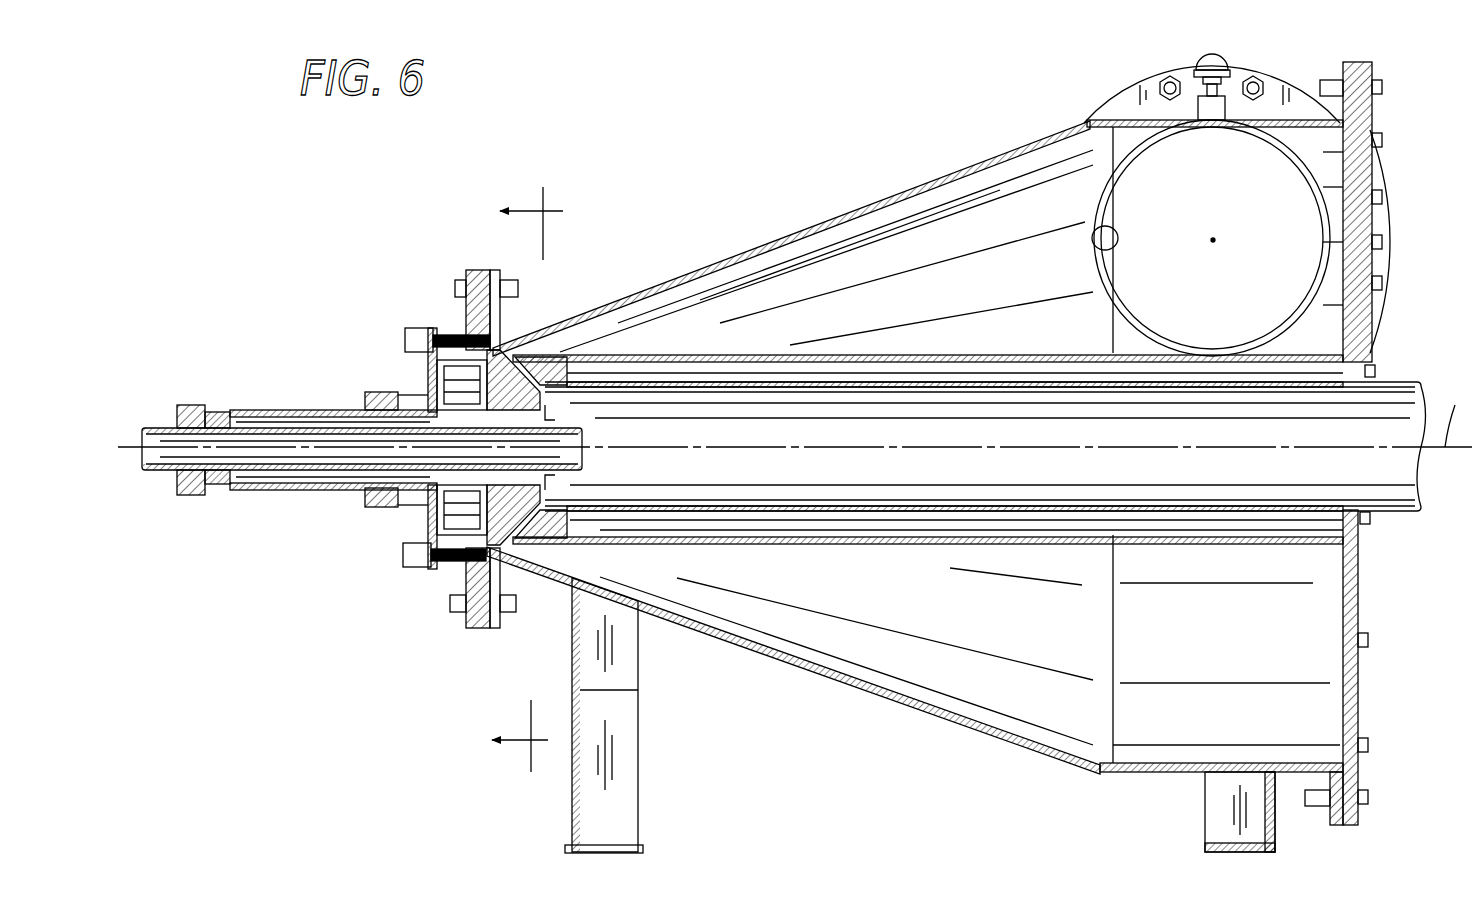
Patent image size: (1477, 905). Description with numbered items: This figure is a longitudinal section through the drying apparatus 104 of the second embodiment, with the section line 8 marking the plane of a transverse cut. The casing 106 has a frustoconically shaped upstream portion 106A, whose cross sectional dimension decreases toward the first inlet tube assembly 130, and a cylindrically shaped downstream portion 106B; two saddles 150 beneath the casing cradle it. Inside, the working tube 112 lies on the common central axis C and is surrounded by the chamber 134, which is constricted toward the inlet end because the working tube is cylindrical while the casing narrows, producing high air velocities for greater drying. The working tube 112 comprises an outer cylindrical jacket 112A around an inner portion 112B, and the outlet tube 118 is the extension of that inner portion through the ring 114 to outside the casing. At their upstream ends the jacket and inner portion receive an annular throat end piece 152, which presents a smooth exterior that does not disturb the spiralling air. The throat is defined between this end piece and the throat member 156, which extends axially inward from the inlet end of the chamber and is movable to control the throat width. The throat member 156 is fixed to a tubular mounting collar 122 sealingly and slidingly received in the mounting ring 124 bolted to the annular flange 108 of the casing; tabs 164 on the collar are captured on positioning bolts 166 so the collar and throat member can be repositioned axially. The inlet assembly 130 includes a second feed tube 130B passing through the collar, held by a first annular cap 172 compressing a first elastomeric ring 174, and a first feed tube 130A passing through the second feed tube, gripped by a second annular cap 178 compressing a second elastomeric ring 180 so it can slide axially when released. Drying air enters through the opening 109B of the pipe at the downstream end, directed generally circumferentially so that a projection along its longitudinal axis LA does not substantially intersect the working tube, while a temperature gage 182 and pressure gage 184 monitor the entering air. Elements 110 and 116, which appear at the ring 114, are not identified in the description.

The hopper assembly 104 is at (1383, 521).
The casing 106 is at (793, 434).
The frustoconically shaped upstream portion 106A is at (760, 246).
The cylindrically shaped downstream portion 106B is at (1122, 110).
The annular flange 108 is at (451, 422).
The opening 109B is at (1098, 250).
The bolt 110 is at (1334, 826).
The working tube 112 is at (973, 410).
The outer cylindrical jacket 112A is at (1130, 355).
The inner portion 112B is at (772, 378).
The ring 114 is at (1357, 677).
The fasteners 116 is at (1378, 125).
The outlet tube 118 is at (1433, 327).
The tubular mounting collar 122 is at (430, 391).
The mounting ring 124 is at (500, 268).
The first inlet tube assembly 130 is at (357, 522).
The first feed tube 130A is at (303, 410).
The second feed tube 130B is at (259, 490).
The chamber 134 is at (950, 240).
The saddles 150 is at (573, 666).
The annular throat end piece 152 is at (560, 347).
The throat member 156 is at (424, 522).
The tabs 164 is at (431, 328).
The positioning bolts 166 is at (446, 562).
The first annular cap 172 is at (386, 500).
The first elastomeric ring 174 is at (368, 493).
The second annular cap 178 is at (196, 480).
The second elastomeric ring 180 is at (180, 476).
The temperature gage 182 is at (1232, 72).
The pressure gage 184 is at (1203, 58).
The longitudinal axis LA is at (1214, 240).
The central axis C is at (1465, 410).
The section line 8- 8 is at (530, 478).